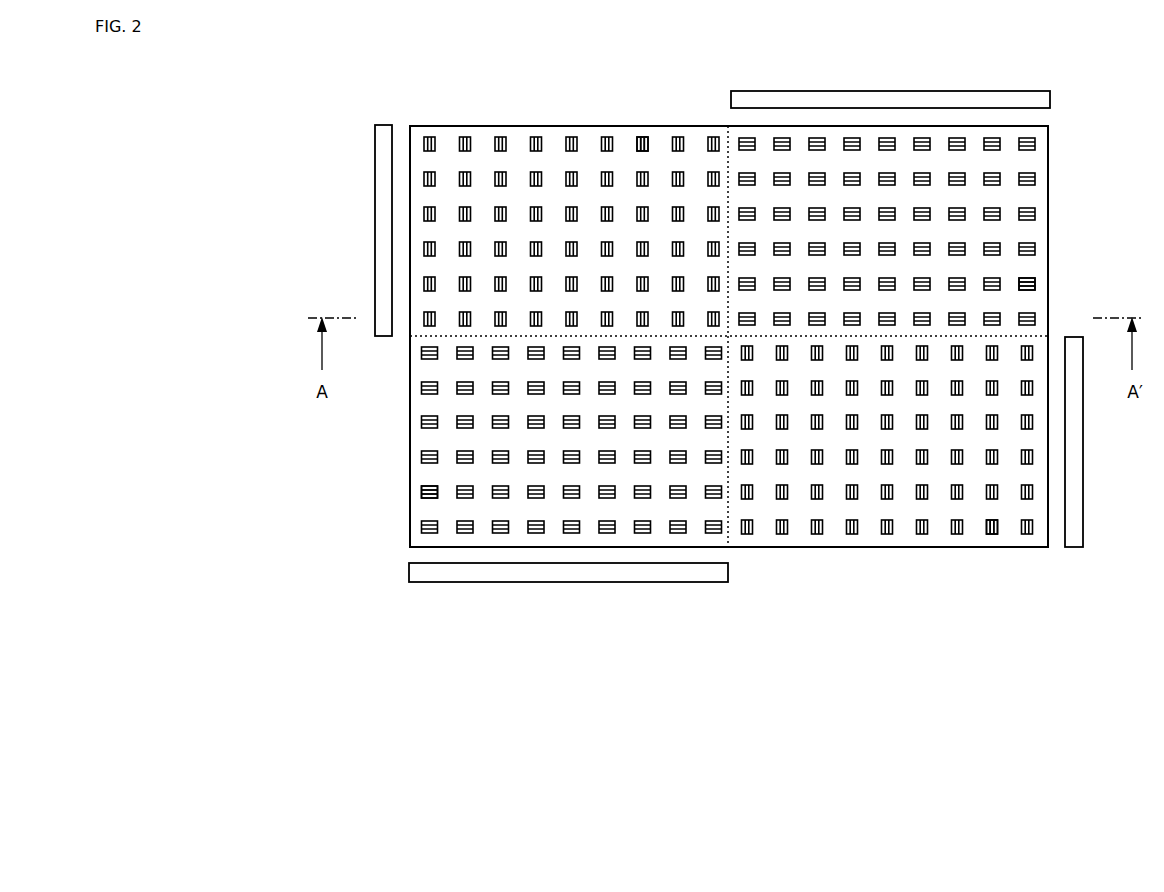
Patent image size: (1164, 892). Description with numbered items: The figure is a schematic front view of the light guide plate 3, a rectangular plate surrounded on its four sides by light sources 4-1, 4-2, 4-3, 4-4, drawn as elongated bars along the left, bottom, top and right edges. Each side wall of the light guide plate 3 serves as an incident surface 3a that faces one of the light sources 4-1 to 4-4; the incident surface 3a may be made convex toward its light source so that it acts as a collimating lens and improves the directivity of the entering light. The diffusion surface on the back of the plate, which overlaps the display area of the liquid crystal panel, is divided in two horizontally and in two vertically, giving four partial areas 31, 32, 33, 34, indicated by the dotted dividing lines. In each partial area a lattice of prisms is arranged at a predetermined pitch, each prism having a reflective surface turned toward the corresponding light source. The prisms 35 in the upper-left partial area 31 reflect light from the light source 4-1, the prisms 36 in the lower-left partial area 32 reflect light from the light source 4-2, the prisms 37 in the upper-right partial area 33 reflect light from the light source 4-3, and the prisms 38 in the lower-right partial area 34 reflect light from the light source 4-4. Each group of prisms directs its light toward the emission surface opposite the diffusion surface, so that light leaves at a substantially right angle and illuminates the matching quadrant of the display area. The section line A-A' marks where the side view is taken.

The light guide plate 3 is at (729, 376).
The incident surface 3a is at (470, 124).
The partial area 31 is at (588, 136).
The partial area 32 is at (440, 437).
The partial area 33 is at (1012, 163).
The partial area 34 is at (903, 534).
The prisms 35 is at (633, 134).
The prisms 36 is at (420, 481).
The prisms 37 is at (1038, 275).
The prisms 38 is at (981, 538).
The light source 4-1 is at (382, 337).
The light source 4-2 is at (728, 572).
The light source 4-3 is at (1016, 91).
The light source 4-4 is at (1083, 520).